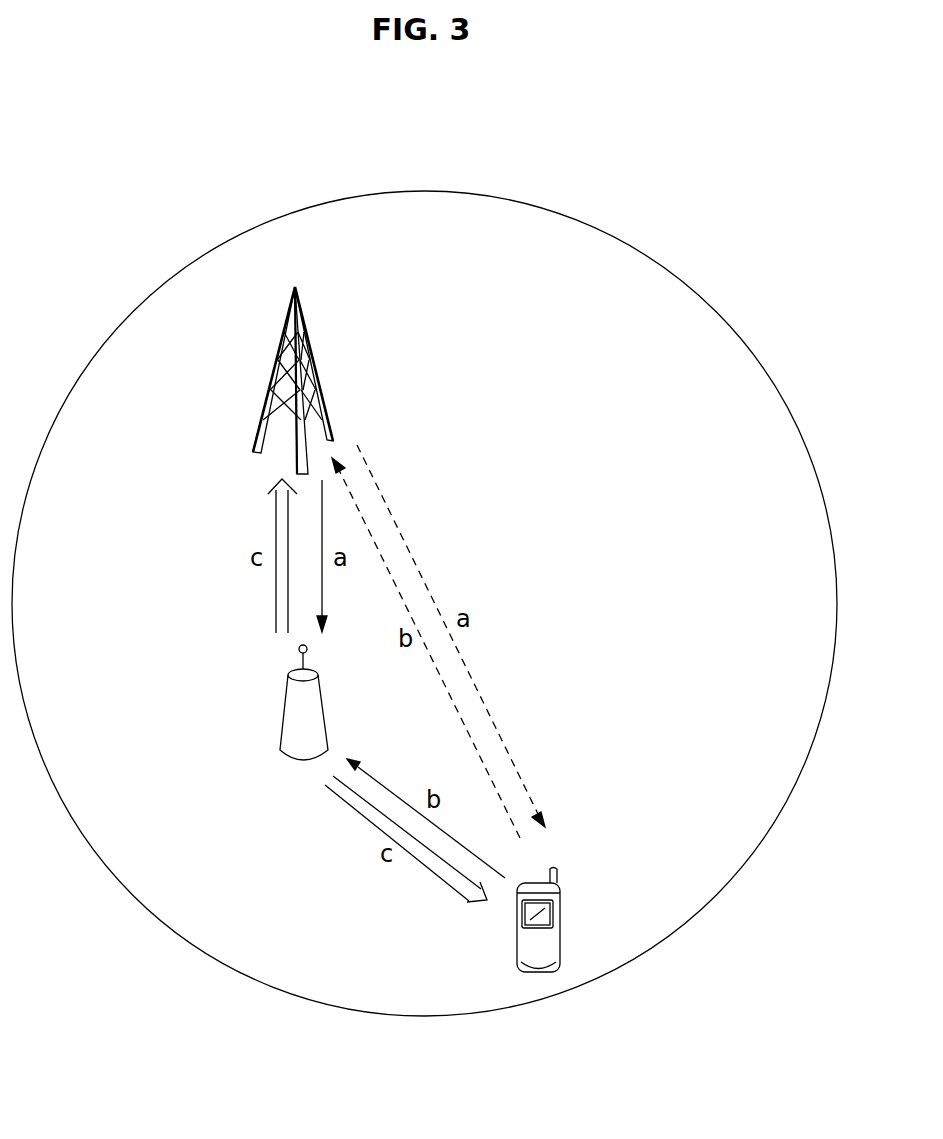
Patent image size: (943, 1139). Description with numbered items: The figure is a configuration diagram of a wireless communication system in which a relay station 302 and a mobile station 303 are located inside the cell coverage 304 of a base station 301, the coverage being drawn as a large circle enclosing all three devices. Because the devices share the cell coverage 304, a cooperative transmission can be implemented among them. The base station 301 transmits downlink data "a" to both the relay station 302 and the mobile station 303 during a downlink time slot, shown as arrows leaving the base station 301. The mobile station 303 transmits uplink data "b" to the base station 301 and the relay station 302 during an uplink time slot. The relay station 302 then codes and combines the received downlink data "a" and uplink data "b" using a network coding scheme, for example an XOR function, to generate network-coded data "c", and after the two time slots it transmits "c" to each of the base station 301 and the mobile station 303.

The base station 301 is at (323, 372).
The relay station 302 is at (262, 732).
The mobile station 303 is at (507, 928).
The cell coverage 304 is at (423, 191).